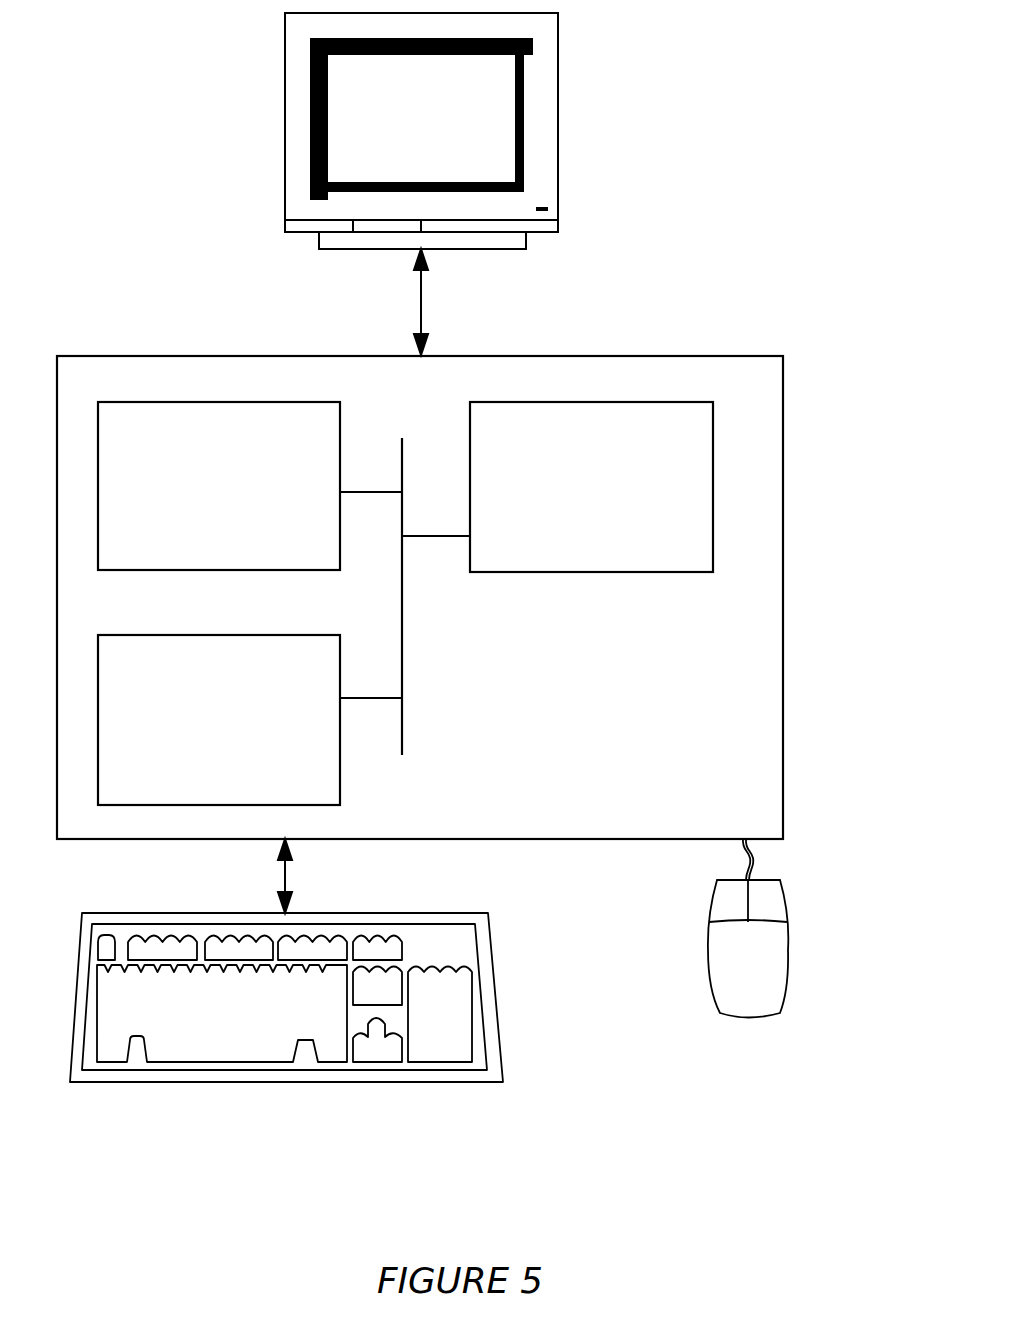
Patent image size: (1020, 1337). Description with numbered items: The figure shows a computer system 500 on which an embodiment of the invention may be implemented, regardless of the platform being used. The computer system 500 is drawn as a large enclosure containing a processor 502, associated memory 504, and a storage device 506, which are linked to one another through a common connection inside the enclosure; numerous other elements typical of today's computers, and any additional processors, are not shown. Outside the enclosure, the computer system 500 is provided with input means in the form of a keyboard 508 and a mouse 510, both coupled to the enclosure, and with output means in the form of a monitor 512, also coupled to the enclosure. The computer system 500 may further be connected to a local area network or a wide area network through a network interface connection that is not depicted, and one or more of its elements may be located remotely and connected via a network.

The computer system 500 is at (472, 597).
The processor 502 is at (241, 500).
The memory 504 is at (632, 499).
The storage device 506 is at (240, 732).
The keyboard 508 is at (234, 1031).
The mouse 510 is at (770, 967).
The monitor 512 is at (432, 136).